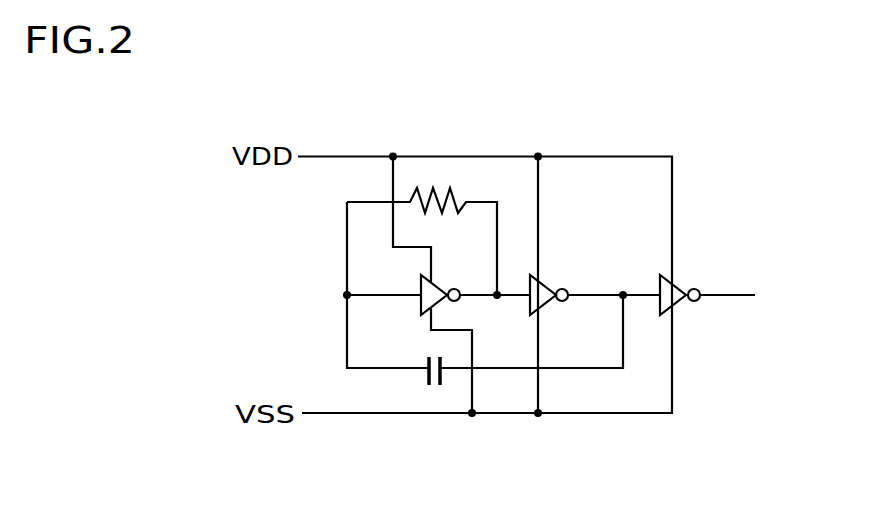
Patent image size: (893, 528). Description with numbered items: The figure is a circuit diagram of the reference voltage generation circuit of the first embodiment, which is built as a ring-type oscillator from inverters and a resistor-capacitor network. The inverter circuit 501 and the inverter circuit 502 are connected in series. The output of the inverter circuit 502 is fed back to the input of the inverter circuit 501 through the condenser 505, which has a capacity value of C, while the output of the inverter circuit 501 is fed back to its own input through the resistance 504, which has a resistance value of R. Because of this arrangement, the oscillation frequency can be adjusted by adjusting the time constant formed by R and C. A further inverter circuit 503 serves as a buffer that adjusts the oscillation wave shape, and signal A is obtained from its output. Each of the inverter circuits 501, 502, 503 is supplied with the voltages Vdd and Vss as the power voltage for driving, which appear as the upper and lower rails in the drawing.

The inverter circuit 501 is at (421, 298).
The inverter circuit 502 is at (553, 303).
The inverter circuit for buffer 503 is at (672, 277).
The resistance 504 is at (442, 180).
The condenser 505 is at (433, 388).